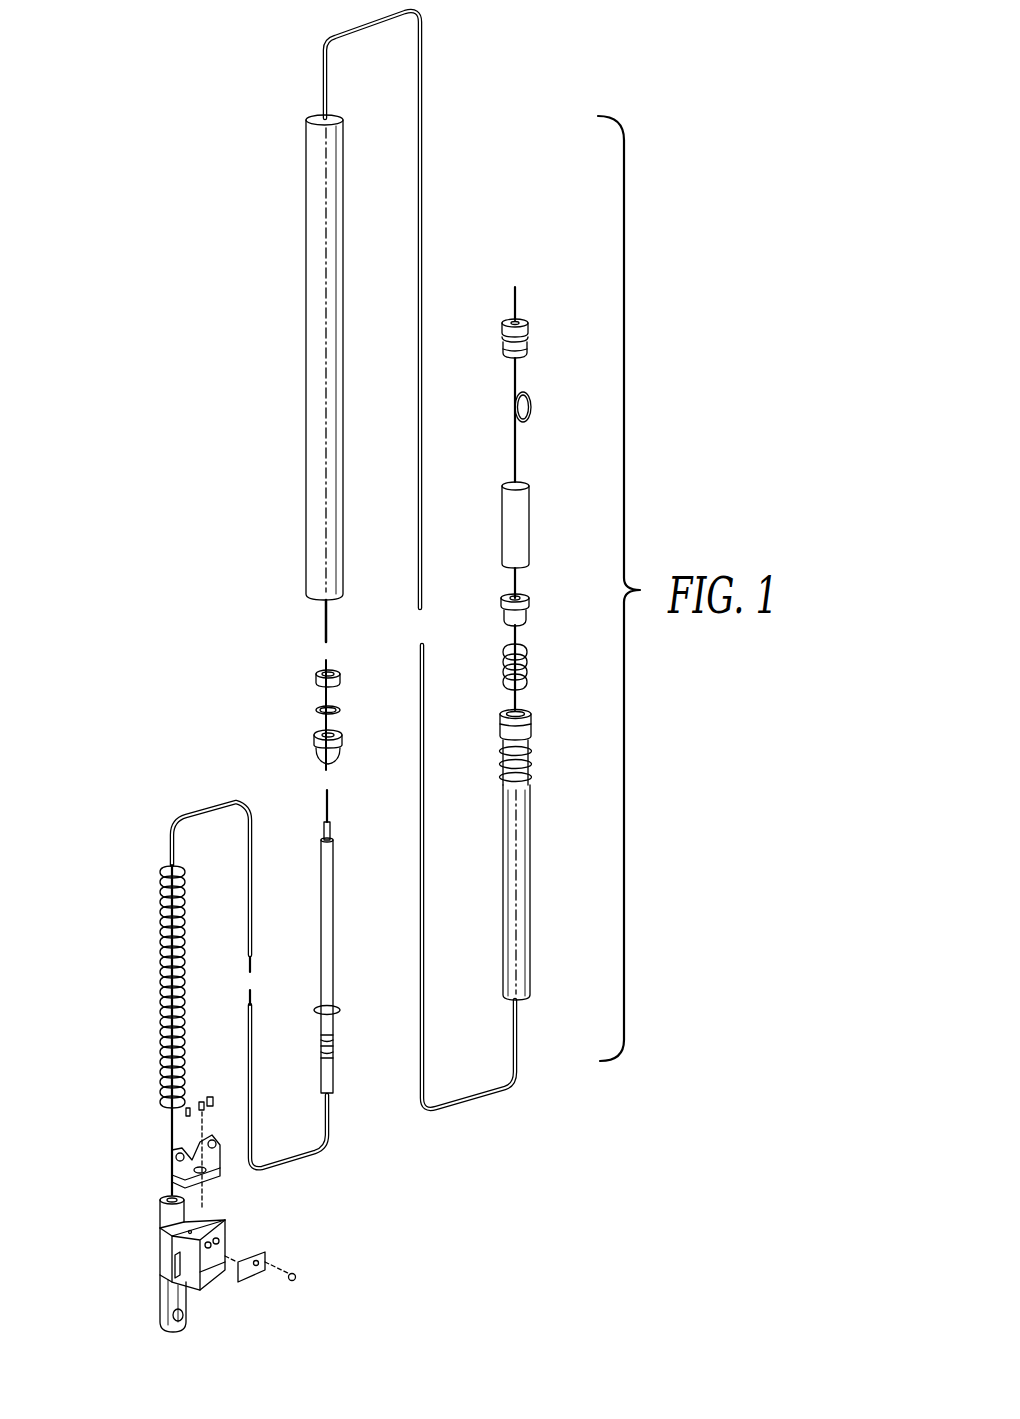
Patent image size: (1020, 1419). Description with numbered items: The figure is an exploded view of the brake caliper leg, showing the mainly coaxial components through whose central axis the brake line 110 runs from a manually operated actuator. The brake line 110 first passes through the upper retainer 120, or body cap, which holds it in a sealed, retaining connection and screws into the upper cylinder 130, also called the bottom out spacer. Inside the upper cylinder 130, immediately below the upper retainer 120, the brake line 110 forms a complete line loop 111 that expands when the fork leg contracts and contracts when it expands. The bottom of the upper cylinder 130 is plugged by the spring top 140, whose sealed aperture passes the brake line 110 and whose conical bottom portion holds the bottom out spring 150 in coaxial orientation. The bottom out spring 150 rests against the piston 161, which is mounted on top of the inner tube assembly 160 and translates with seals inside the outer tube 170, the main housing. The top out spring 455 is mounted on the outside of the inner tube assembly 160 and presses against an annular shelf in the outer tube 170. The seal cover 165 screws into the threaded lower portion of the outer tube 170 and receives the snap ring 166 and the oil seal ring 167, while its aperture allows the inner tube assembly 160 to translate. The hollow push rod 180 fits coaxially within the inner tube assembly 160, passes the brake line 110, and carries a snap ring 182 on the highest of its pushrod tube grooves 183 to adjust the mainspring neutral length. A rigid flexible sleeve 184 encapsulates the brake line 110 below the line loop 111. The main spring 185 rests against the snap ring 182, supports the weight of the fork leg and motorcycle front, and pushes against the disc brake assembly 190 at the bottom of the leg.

The brake line 110 is at (515, 306).
The line loop 111 is at (531, 410).
The upper retainer 120 is at (528, 340).
The upper cylinder 130 is at (529, 525).
The spring top 140 is at (529, 612).
The bottom out spring 150 is at (528, 665).
The inner tube assembly 160 is at (530, 915).
The piston 161 is at (531, 725).
The top out spring 455 is at (532, 762).
The seal cover 165 is at (314, 752).
The snap ring 166 is at (318, 710).
The oil seal ring 167 is at (318, 678).
The outer tube 170 is at (308, 333).
The push rod 180 is at (333, 956).
The snap ring 182 is at (338, 1010).
The pushrod tube grooves 183 is at (334, 1048).
The rigid flexible sleeve 184 is at (300, 1160).
The main spring 185 is at (165, 982).
The disc brake assembly 190 is at (165, 1215).